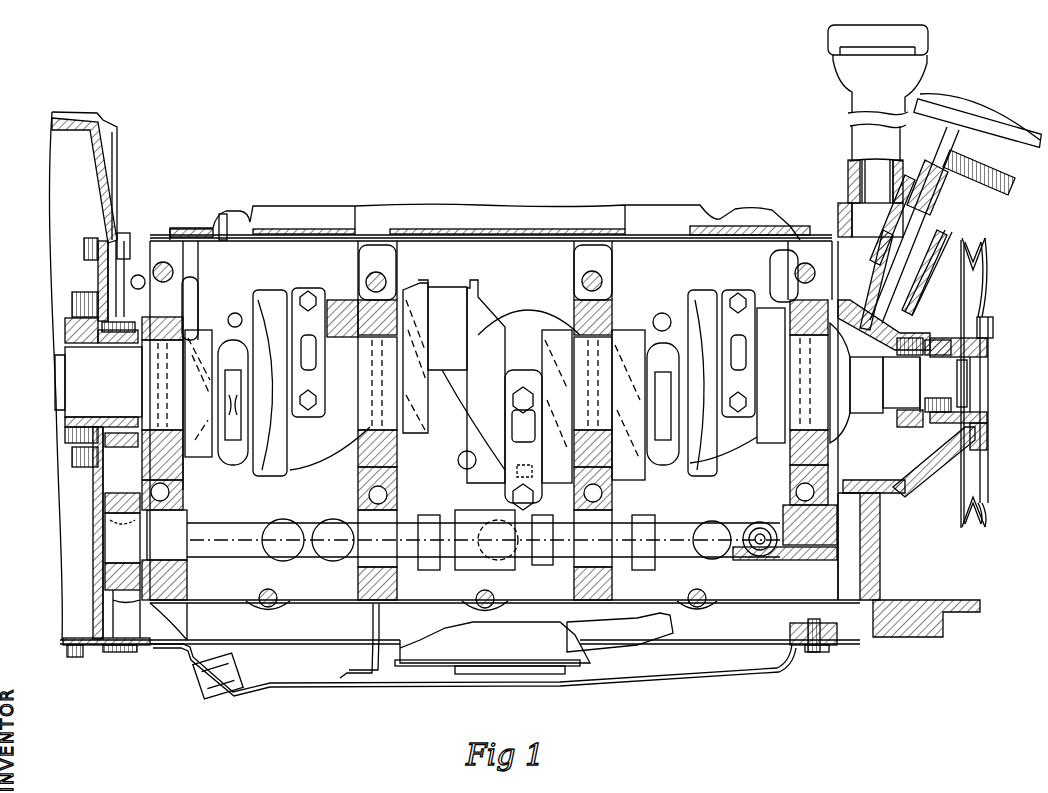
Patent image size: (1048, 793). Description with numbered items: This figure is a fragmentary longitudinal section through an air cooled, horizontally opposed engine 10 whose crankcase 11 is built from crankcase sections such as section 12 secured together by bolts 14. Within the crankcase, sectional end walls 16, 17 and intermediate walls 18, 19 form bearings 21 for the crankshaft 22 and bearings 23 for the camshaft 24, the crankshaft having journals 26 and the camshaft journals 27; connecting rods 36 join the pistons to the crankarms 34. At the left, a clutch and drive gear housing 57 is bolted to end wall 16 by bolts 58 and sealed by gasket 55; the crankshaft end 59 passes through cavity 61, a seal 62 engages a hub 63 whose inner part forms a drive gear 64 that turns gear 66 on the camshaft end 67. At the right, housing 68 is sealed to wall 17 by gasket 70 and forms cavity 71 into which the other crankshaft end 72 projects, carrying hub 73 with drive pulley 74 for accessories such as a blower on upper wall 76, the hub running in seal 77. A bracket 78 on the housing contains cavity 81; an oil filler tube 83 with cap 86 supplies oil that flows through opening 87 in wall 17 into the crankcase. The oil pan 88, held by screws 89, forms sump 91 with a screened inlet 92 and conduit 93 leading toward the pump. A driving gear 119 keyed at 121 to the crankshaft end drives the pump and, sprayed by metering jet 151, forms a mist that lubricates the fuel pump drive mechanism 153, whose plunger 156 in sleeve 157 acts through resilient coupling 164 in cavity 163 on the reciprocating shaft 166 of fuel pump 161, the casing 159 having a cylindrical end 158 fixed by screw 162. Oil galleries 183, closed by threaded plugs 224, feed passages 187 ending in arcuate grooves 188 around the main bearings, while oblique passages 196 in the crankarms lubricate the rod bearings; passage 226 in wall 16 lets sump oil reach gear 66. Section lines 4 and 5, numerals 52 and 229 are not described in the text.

The engine 10 is at (530, 206).
The crankcase 11 is at (818, 248).
The crankcase section 12 is at (730, 244).
The bolts 14 is at (180, 268).
The sectional end wall 16 is at (190, 300).
The sectional end wall 17 is at (790, 285).
The sectional intermediate wall 18 is at (390, 262).
The sectional intermediate wall 19 is at (575, 260).
The bearings 21 is at (190, 330).
The crankshaft 22 is at (80, 385).
The bearings 23 is at (395, 515).
The camshaft 24 is at (220, 525).
The journals 26 is at (150, 373).
The journals 27 is at (190, 505).
The crankarms 34 is at (475, 290).
The connecting rods 36 is at (229, 356).
The camshaft 52 is at (460, 515).
The gasket 55 is at (122, 245).
The clutch and drive gear housing 57 is at (103, 178).
The bolts 58 is at (90, 245).
The crankshaft end 59 is at (70, 360).
The cavity 61 is at (138, 280).
The seal 62 is at (80, 315).
The hub 63 is at (68, 332).
The drive gear 64 is at (85, 300).
The gear 66 is at (105, 500).
The camshaft end 67 is at (110, 527).
The housing 68 is at (880, 540).
The gasket 70 is at (875, 560).
The cavity 71 is at (915, 465).
The crankshaft end 72 is at (890, 420).
The hub 73 is at (988, 356).
The drive pulley 74 is at (985, 287).
The upper wall 76 is at (207, 224).
The seal 77 is at (957, 317).
The bracket 78 is at (848, 175).
The cavity 81 is at (843, 215).
The oil filler tube 83 is at (915, 65).
The cap 86 is at (828, 36).
The opening 87 is at (790, 632).
The oil pan 88 is at (315, 685).
The screws 89 is at (76, 657).
The oil sump 91 is at (350, 672).
The screened inlet 92 is at (575, 652).
The conduit 93 is at (640, 645).
The driving gear 119 is at (910, 430).
The key 121 is at (903, 370).
The metering jet 151 is at (845, 330).
The fuel pump drive mechanism 153 is at (860, 445).
The plunger 156 is at (878, 237).
The sleeve 157 is at (915, 290).
The cylindrical end 158 is at (975, 135).
The casing 159 is at (955, 108).
The fuel pump 161 is at (1004, 116).
The screw 162 is at (1013, 176).
The cavity 163 is at (955, 226).
The resilient coupling 164 is at (958, 200).
The reciprocating shaft 166 is at (915, 160).
The oil galleries 183 is at (860, 535).
The passages 187 is at (300, 520).
The arcuate grooves 188 is at (165, 316).
The obliquely disposed passages 196 is at (205, 400).
The threaded plugs 224 is at (245, 555).
The passage 226 is at (190, 658).
The cam lobes 229 is at (330, 526).
The section line 4 is at (862, 140).
The section line 5 is at (852, 106).